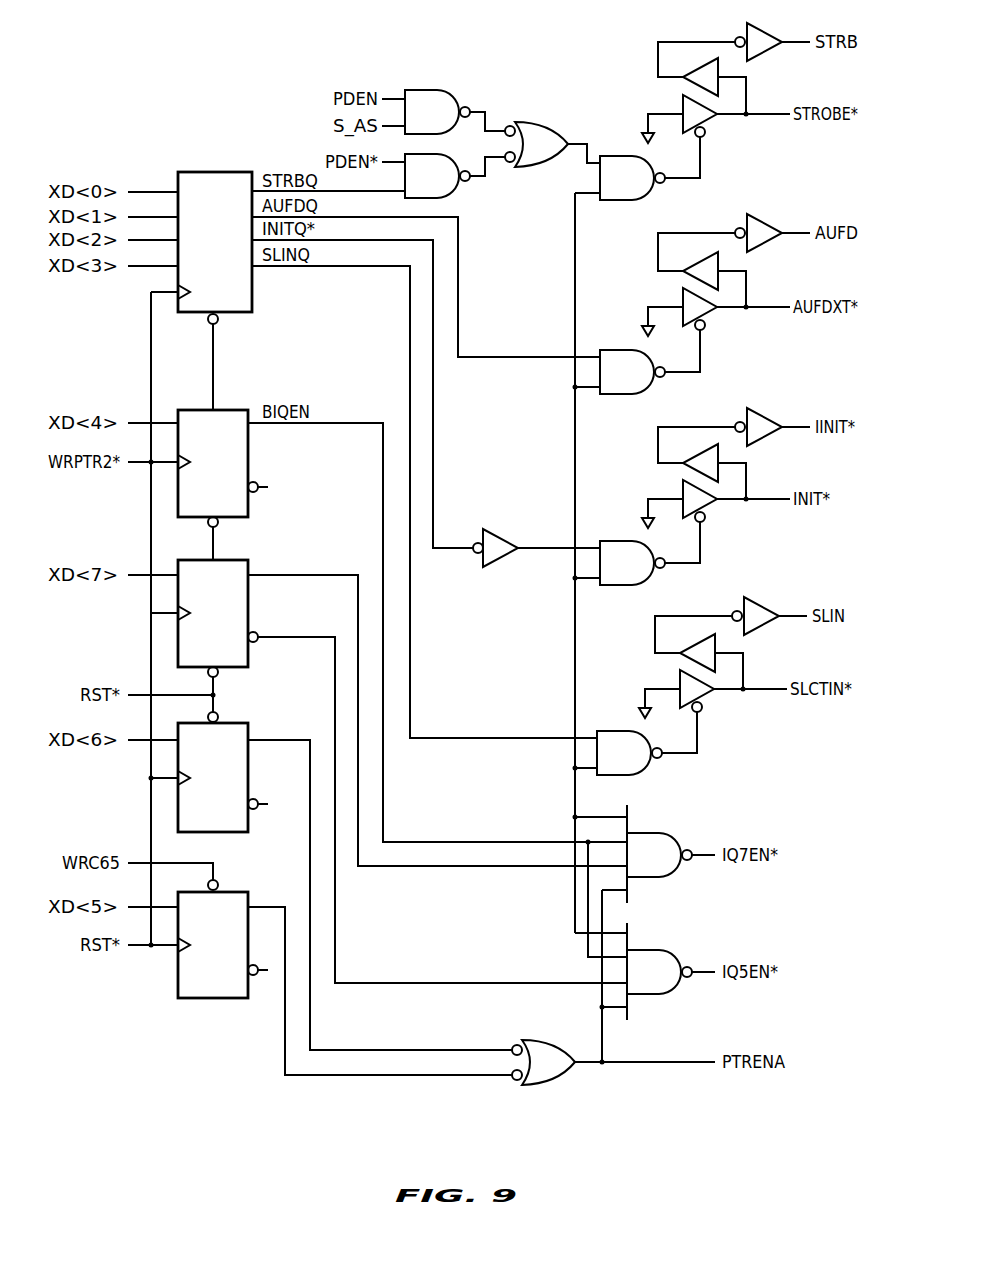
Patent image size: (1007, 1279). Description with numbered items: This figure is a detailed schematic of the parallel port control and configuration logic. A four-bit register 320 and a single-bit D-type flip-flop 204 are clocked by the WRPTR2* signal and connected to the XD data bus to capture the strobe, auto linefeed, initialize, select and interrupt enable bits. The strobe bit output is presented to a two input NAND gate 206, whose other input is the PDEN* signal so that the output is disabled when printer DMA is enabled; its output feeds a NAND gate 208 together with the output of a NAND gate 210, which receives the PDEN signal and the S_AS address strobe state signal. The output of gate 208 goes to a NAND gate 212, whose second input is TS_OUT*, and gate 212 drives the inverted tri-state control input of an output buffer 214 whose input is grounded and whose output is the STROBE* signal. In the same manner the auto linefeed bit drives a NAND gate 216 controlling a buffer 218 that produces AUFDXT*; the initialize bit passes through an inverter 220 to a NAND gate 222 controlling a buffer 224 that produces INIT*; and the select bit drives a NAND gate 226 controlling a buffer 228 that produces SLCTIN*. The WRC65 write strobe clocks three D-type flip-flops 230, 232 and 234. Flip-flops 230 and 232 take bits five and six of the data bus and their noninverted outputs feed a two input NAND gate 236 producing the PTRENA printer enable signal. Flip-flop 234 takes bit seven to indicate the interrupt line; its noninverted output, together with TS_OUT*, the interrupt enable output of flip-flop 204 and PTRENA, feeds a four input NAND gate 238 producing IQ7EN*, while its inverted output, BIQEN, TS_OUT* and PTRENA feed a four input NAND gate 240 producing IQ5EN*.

The quad D flip-flop register 320 is at (221, 172).
The single bit D-type flip-flop 204 is at (232, 410).
The D-type flip-flop 234 is at (232, 560).
The D-type flip-flop 232 is at (218, 832).
The D-type flip-flop 230 is at (218, 998).
The two input NAND gate 210 is at (440, 89).
The two input NAND gate 206 is at (452, 197).
The two input NAND gate 208 is at (543, 122).
The two input NAND gate 212 is at (625, 200).
The output buffer 214 is at (707, 118).
The two input NAND gate 216 is at (625, 394).
The buffer 218 is at (707, 311).
The inverter 220 is at (500, 560).
The NAND gate 222 is at (625, 585).
The buffer 224 is at (707, 503).
The NAND gate 226 is at (622, 775).
The buffer 228 is at (704, 693).
The 4 input NAND gate 238 is at (658, 877).
The four input NAND gate 240 is at (658, 994).
The two input NAND gate 236 is at (545, 1086).